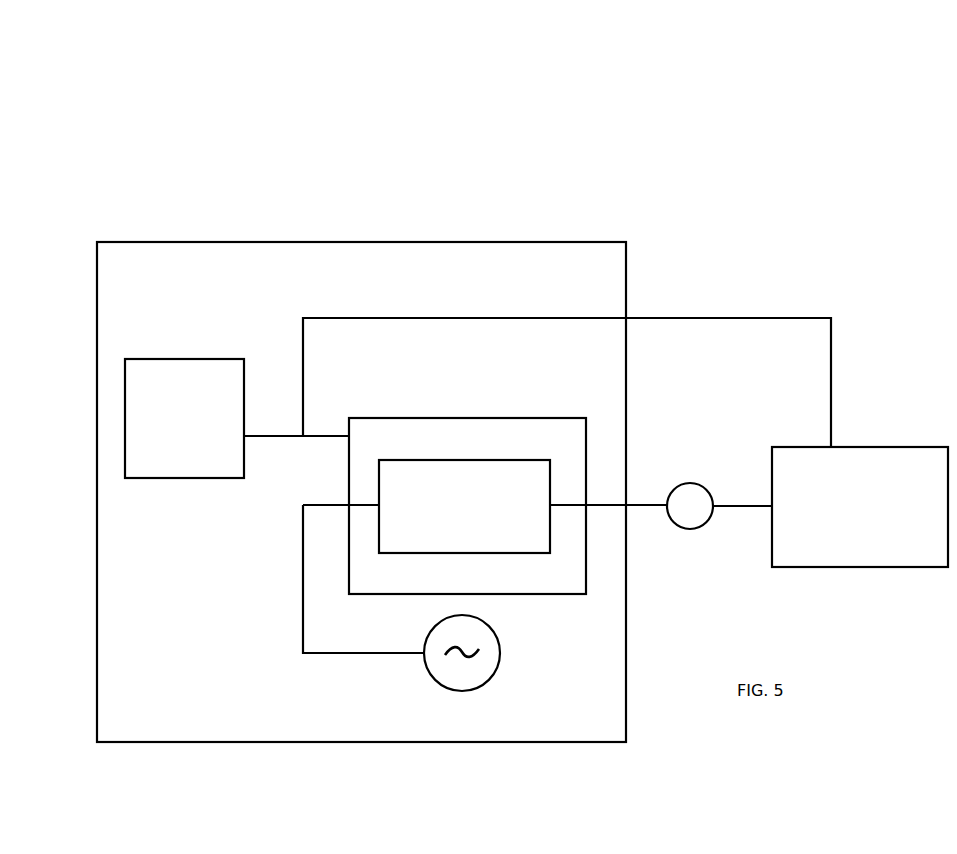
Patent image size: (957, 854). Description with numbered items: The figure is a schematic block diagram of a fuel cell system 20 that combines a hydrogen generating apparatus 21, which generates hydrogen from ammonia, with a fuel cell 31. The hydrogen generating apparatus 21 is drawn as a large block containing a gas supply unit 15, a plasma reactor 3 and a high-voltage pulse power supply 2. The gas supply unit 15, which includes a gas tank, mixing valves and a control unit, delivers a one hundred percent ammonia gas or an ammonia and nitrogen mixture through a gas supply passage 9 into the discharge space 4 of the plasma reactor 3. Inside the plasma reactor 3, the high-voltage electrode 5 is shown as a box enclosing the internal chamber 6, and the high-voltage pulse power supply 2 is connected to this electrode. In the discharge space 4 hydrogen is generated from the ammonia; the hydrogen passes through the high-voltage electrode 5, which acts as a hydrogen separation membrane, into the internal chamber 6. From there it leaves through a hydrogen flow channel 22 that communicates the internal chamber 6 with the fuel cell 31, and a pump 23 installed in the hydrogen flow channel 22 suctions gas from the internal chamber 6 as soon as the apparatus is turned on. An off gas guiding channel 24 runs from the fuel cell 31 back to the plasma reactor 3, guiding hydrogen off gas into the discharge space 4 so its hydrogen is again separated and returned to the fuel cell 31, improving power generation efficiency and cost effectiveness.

The fuel cell system 20 is at (664, 195).
The hydrogen generating apparatus 21 is at (358, 241).
The gas supply unit 15 is at (188, 359).
The gas supply passage 9 is at (284, 437).
The plasma reactor 3 is at (470, 418).
The discharge space 4 is at (423, 437).
The internal chamber 6 is at (464, 506).
The high-voltage electrode 5 is at (532, 553).
The high-voltage pulse power supply 2 is at (462, 691).
The off gas guiding channel 24 is at (745, 317).
The pump 23 is at (690, 483).
The hydrogen flow channel 22 is at (739, 505).
The fuel cell 31 is at (863, 447).